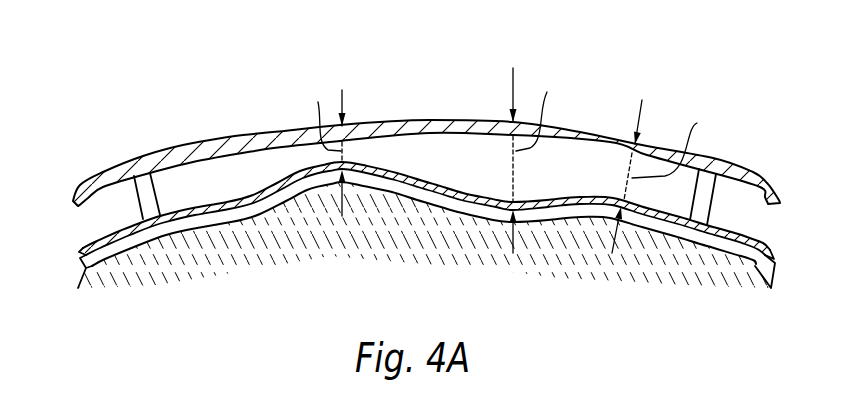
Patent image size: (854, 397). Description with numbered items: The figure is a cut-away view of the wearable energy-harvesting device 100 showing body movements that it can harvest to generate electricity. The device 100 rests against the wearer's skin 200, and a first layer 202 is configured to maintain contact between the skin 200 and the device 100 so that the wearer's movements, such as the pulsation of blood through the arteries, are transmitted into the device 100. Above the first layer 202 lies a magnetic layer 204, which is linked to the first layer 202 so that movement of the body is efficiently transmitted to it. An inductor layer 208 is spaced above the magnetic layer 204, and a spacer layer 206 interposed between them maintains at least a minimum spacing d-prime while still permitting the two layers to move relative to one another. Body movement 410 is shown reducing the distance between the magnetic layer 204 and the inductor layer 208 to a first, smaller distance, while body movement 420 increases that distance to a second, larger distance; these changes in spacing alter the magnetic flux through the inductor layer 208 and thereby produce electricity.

The device 100 is at (186, 76).
The wearer's skin 200 is at (724, 279).
The first layer 202 is at (79, 256).
The magnetic layer 204 is at (767, 240).
The spacer layer 206 is at (137, 200).
The inductor layer 208 is at (388, 123).
The body movement 410 is at (336, 189).
The body movement 420 is at (537, 197).